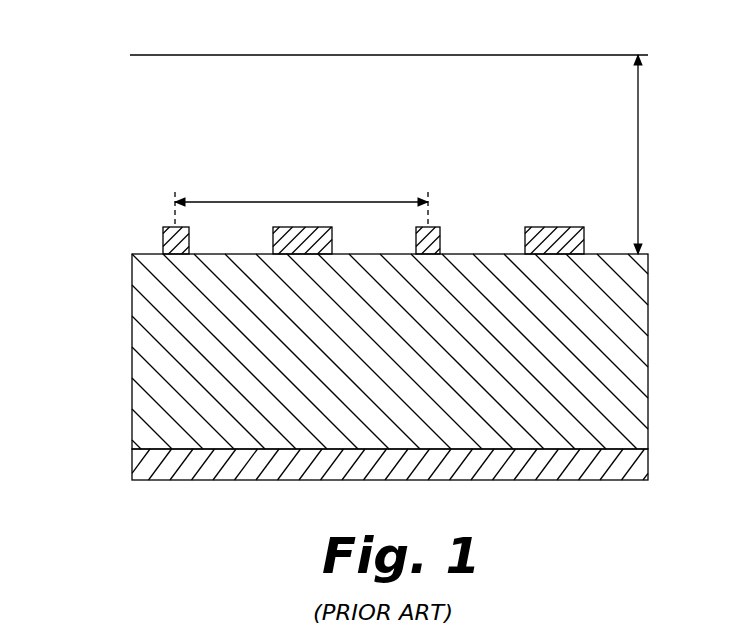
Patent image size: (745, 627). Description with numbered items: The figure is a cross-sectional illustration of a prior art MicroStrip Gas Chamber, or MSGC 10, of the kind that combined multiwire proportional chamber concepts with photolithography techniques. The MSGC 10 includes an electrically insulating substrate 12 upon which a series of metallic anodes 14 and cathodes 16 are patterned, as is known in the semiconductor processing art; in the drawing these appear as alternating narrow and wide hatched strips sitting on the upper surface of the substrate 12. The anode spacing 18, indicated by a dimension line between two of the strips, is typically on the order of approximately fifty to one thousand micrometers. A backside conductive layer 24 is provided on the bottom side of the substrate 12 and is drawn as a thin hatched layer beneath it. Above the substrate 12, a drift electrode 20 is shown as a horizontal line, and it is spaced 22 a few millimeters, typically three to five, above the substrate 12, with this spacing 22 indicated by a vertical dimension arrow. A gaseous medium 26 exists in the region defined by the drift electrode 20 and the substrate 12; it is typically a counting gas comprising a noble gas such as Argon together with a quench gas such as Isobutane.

The MicroStrip Gas Chamber 10 is at (94, 104).
The electrically insulating substrate 12 is at (132, 353).
The metallic anodes 14 is at (163, 240).
The cathodes 16 is at (333, 247).
The anode spacing 18 is at (300, 202).
The drift electrode 20 is at (364, 54).
The spacing 22 is at (637, 150).
The backside conductive layer 24 is at (648, 463).
The gaseous medium 26 is at (503, 112).